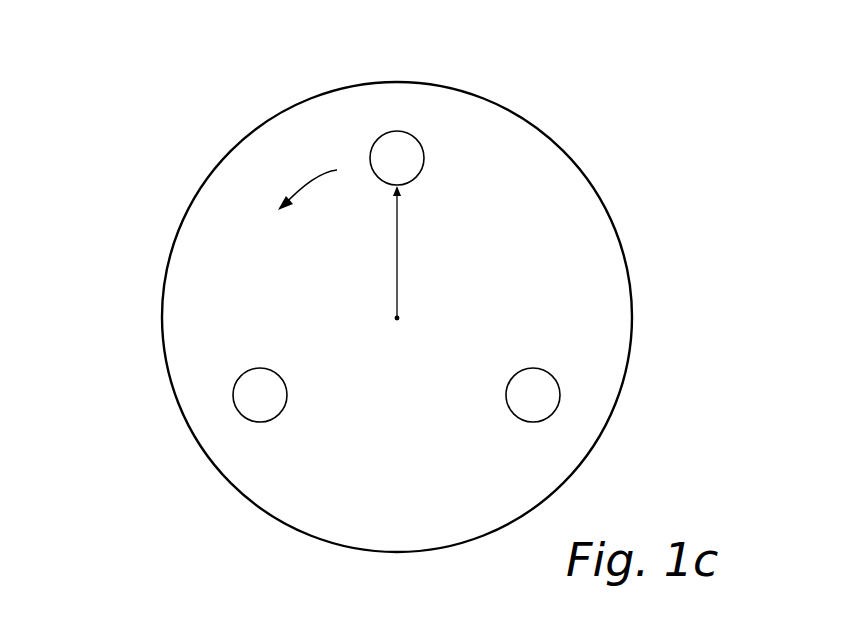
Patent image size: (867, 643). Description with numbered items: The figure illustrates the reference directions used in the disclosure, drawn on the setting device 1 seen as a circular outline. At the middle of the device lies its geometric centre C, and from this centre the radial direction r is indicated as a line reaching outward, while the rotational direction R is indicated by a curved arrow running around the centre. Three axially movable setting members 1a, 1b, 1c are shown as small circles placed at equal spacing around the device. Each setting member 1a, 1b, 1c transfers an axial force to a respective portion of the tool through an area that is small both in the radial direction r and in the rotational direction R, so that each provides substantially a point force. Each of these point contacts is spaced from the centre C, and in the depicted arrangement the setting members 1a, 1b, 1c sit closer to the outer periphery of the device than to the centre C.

The disc / rotating body 1 is at (397, 317).
The setting member 1a is at (256, 397).
The setting member 1b is at (398, 157).
The setting member 1c is at (545, 398).
The geometric centre C is at (400, 318).
The radial direction r is at (405, 252).
The rotational direction R is at (295, 206).